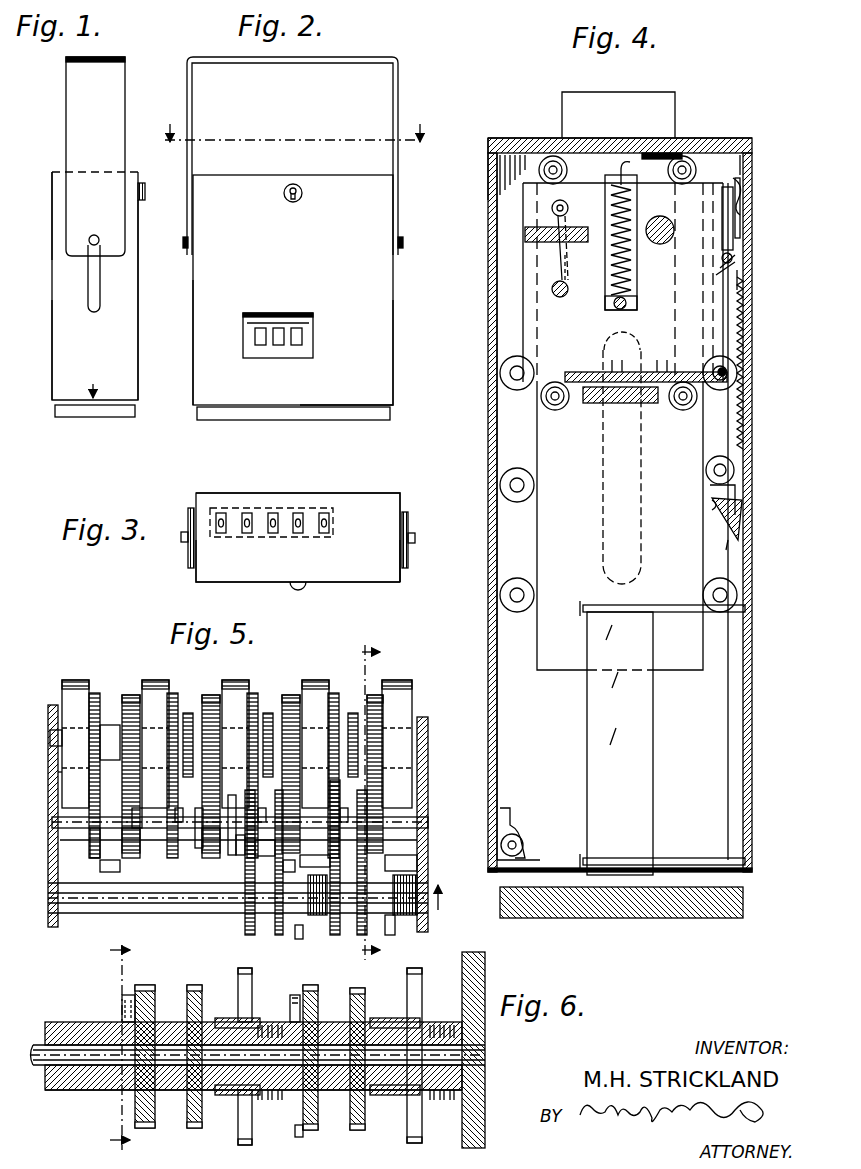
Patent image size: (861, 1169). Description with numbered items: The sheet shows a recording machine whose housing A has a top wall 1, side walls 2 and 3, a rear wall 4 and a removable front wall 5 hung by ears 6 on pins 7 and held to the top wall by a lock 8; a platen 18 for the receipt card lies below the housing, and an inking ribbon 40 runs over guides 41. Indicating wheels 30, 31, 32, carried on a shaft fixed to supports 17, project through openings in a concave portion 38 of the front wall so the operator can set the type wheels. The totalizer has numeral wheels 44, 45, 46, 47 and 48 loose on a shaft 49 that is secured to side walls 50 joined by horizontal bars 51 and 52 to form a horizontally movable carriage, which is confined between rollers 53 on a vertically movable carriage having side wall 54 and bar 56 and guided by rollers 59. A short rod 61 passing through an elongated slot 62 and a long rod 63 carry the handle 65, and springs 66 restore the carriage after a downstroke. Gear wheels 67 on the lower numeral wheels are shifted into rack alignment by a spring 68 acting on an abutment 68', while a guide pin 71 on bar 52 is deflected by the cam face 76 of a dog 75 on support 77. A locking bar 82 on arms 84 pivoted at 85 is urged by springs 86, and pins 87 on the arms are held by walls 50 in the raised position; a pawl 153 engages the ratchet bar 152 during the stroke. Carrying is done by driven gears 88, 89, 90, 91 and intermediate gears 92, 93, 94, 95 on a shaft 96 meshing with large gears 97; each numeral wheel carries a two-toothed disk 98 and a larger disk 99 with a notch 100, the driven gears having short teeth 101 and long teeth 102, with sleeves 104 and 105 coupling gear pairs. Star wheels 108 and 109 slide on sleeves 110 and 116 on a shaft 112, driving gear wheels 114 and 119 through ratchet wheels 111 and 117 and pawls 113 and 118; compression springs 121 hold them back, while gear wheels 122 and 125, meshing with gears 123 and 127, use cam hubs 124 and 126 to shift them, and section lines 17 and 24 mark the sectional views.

In FIG. 1, the top wall 1 is at (60, 171).
In FIG. 2, the top wall 1 is at (248, 176).
In FIG. 3, the top wall 1 is at (378, 505).
In FIG. 4, the top wall 1 is at (510, 138).
In FIG. 1, the side wall 2 is at (62, 322).
In FIG. 2, the side wall 2 is at (192, 312).
In FIG. 3, the side wall 2 is at (196, 575).
In FIG. 4, the side wall 2 is at (729, 790).
In FIG. 2, the side wall 3 is at (416, 313).
In FIG. 3, the side wall 3 is at (402, 578).
In FIG. 1, the rear wall 4 is at (50, 257).
In FIG. 3, the rear wall 4 is at (345, 493).
In FIG. 4, the rear wall 4 is at (752, 678).
In FIG. 1, the removable front wall 5 is at (141, 292).
In FIG. 2, the removable front wall 5 is at (367, 354).
In FIG. 3, the removable front wall 5 is at (345, 583).
In FIG. 4, the removable front wall 5 is at (496, 563).
In FIG. 4, the ears 6 is at (525, 840).
In FIG. 5, the ears 6 is at (222, 855).
In FIG. 4, the pins 7 is at (498, 850).
In FIG. 1, the lock 8 is at (146, 196).
In FIG. 2, the lock 8 is at (294, 185).
In FIG. 3, the lock 8 is at (292, 588).
In FIG. 5, the supports 17 is at (394, 805).
In FIG. 4, the platen 18 is at (695, 918).
In FIG. 6, the section line 24 is at (137, 1048).
In FIG. 2, the indicating wheel 30 is at (300, 340).
In FIG. 2, the indicating wheel 31 is at (278, 346).
In FIG. 2, the indicating wheel 32 is at (261, 328).
In FIG. 2, the concave portion 38 is at (290, 353).
In FIG. 4, the endless ribbon 40 is at (645, 792).
In FIG. 4, the guides 41 is at (590, 612).
In FIG. 3, the numeral wheel 44 is at (324, 513).
In FIG. 5, the numeral wheel 44 is at (412, 695).
In FIG. 3, the numeral wheel 45 is at (298, 513).
In FIG. 5, the numeral wheel 45 is at (313, 680).
In FIG. 3, the numeral wheel 46 is at (273, 513).
In FIG. 5, the numeral wheel 46 is at (240, 680).
In FIG. 3, the numeral wheel 47 is at (247, 513).
In FIG. 5, the numeral wheel 47 is at (153, 680).
In FIG. 3, the numeral wheel 48 is at (220, 513).
In FIG. 5, the numeral wheel 48 is at (64, 680).
In FIG. 4, the shaft 49 is at (660, 244).
In FIG. 5, the shaft 49 is at (50, 738).
In FIG. 4, the side walls 50 is at (523, 310).
In FIG. 5, the side walls 50 is at (48, 797).
In FIG. 6, the side walls 50 is at (487, 968).
In FIG. 4, the horizontal bar 51 is at (525, 242).
In FIG. 4, the horizontal bar 52 is at (580, 372).
In FIG. 4, the rollers 53 is at (553, 156).
In FIG. 4, the side wall 54 is at (545, 522).
In FIG. 4, the bar 56 is at (622, 403).
In FIG. 4, the guide rollers 59 is at (506, 380).
In FIG. 1, the short rod 61 is at (89, 240).
In FIG. 2, the short rod 61 is at (183, 241).
In FIG. 3, the short rod 61 is at (181, 537).
In FIG. 4, the short rod 61 is at (626, 340).
In FIG. 1, the elongated slot 62 is at (88, 291).
In FIG. 4, the elongated slot 62 is at (603, 490).
In FIG. 2, the long rod 63 is at (404, 246).
In FIG. 3, the long rod 63 is at (415, 540).
In FIG. 1, the handle 65 is at (118, 108).
In FIG. 2, the handle 65 is at (402, 86).
In FIG. 3, the handle 65 is at (190, 508).
In FIG. 4, the springs 66 is at (612, 166).
In FIG. 5, the gear wheel 67 is at (188, 713).
In FIG. 4, the spring 68 is at (512, 240).
In FIG. 4, the abutment 68' is at (583, 262).
In FIG. 4, the guide pin 71 is at (722, 368).
In FIG. 4, the dog 75 is at (718, 538).
In FIG. 4, the cam face 76 is at (727, 548).
In FIG. 4, the support 77 is at (740, 506).
In FIG. 4, the bar 82 is at (745, 216).
In FIG. 4, the arms 84 is at (722, 232).
In FIG. 4, the pivot 85 is at (722, 258).
In FIG. 4, the springs 86 is at (752, 192).
In FIG. 4, the pins 87 is at (740, 153).
In FIG. 5, the driven gear 88 is at (405, 850).
In FIG. 5, the driven gear 89 is at (328, 858).
In FIG. 5, the driven gear 90 is at (236, 840).
In FIG. 5, the driven gear 91 is at (138, 855).
In FIG. 5, the intermediate gear 92 is at (345, 808).
In FIG. 5, the intermediate gear 93 is at (258, 808).
In FIG. 5, the intermediate gear 94 is at (178, 812).
In FIG. 5, the intermediate gear 95 is at (92, 860).
In FIG. 4, the shaft 96 is at (613, 303).
In FIG. 5, the shaft 96 is at (52, 823).
In FIG. 5, the large gear 97 is at (95, 693).
In FIG. 5, the disk 98 is at (125, 700).
In FIG. 5, the larger disk 99 is at (128, 695).
In FIG. 5, the notch 100 is at (62, 772).
In FIG. 5, the short teeth 101 is at (125, 855).
In FIG. 5, the long teeth 102 is at (178, 890).
In FIG. 5, the sleeve 104 is at (198, 848).
In FIG. 5, the sleeve 105 is at (102, 862).
In FIG. 5, the star wheel 108 is at (425, 935).
In FIG. 6, the star wheel 108 is at (422, 1140).
In FIG. 5, the star wheel 109 is at (299, 938).
In FIG. 6, the star wheel 109 is at (292, 1136).
In FIG. 6, the sleeve 110 is at (487, 1082).
In FIG. 6, the ratchet wheel 111 is at (297, 1112).
In FIG. 4, the shaft 112 is at (552, 290).
In FIG. 5, the shaft 112 is at (48, 895).
In FIG. 6, the shaft 112 is at (487, 1055).
In FIG. 6, the pawl 113 is at (292, 1000).
In FIG. 5, the gear wheel 114 is at (350, 935).
In FIG. 6, the gear wheel 114 is at (312, 1132).
In FIG. 6, the sleeve 116 is at (225, 1090).
In FIG. 5, the ratchet wheel 117 is at (238, 932).
In FIG. 6, the ratchet wheel 117 is at (125, 1100).
In FIG. 5, the pawl 118 is at (228, 915).
In FIG. 6, the pawl 118 is at (122, 1006).
In FIG. 5, the gear wheel 119 is at (250, 935).
In FIG. 6, the gear wheel 119 is at (142, 985).
In FIG. 5, the compression springs 121 is at (425, 915).
In FIG. 6, the compression springs 121 is at (262, 1022).
In FIG. 6, the gear wheel 122 is at (360, 1130).
In FIG. 5, the gear 123 is at (400, 865).
In FIG. 6, the hub 124 is at (385, 1012).
In FIG. 6, the gear wheel 125 is at (193, 1130).
In FIG. 5, the hub 126 is at (310, 868).
In FIG. 6, the hub 126 is at (216, 1022).
In FIG. 5, the gear 127 is at (280, 935).
In FIG. 4, the vertical bar 152 is at (748, 300).
In FIG. 4, the pawl 153 is at (748, 282).
In FIG. 1, the housing A is at (52, 372).
In FIG. 2, the housing A is at (193, 360).
In FIG. 3, the housing A is at (400, 493).
In FIG. 4, the housing A is at (752, 145).